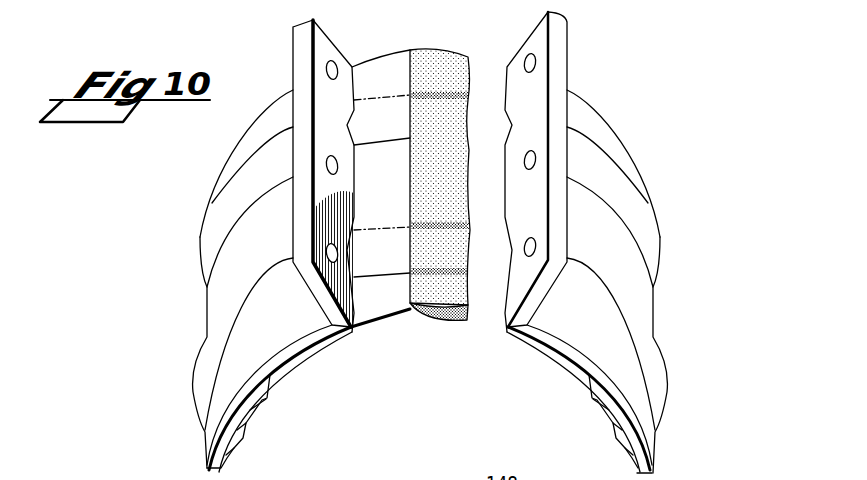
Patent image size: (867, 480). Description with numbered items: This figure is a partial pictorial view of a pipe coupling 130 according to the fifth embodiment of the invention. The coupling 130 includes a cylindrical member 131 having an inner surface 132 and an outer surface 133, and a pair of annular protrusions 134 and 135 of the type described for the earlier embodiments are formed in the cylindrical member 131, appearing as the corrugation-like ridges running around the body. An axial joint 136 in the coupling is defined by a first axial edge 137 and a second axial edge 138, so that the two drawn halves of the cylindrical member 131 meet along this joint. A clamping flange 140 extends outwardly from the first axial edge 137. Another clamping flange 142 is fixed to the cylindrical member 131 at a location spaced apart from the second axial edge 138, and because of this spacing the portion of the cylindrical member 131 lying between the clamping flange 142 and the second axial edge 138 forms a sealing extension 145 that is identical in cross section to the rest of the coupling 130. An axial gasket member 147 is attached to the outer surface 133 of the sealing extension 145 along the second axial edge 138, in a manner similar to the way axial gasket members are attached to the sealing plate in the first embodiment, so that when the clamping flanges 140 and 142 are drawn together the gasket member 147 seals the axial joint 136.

The coupling 130 is at (657, 90).
The cylindrical member 131 is at (600, 117).
The inner surface 132 is at (622, 455).
The outer surface 133 is at (660, 455).
The annular protrusion 134 is at (207, 236).
The annular protrusion 135 is at (207, 380).
The axial joint 136 is at (485, 74).
The first axial edge 137 is at (427, 322).
The second axial edge 138 is at (507, 332).
The clamping flange 140 is at (533, 33).
The clamping flange 142 is at (326, 37).
The sealing extension 145 is at (374, 302).
The axial gasket member 147 is at (435, 50).